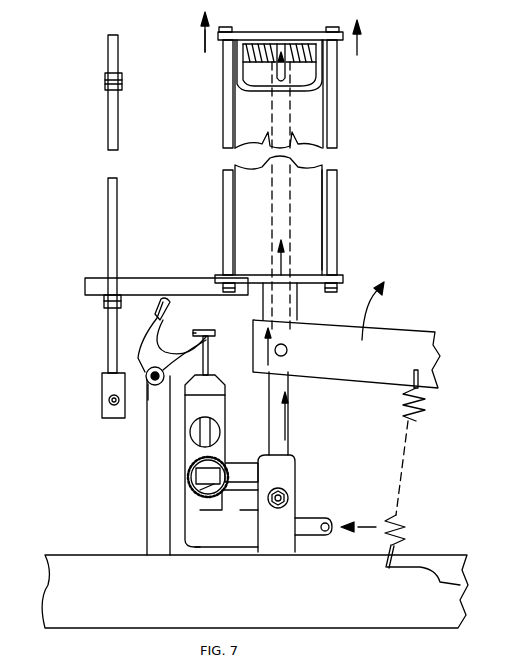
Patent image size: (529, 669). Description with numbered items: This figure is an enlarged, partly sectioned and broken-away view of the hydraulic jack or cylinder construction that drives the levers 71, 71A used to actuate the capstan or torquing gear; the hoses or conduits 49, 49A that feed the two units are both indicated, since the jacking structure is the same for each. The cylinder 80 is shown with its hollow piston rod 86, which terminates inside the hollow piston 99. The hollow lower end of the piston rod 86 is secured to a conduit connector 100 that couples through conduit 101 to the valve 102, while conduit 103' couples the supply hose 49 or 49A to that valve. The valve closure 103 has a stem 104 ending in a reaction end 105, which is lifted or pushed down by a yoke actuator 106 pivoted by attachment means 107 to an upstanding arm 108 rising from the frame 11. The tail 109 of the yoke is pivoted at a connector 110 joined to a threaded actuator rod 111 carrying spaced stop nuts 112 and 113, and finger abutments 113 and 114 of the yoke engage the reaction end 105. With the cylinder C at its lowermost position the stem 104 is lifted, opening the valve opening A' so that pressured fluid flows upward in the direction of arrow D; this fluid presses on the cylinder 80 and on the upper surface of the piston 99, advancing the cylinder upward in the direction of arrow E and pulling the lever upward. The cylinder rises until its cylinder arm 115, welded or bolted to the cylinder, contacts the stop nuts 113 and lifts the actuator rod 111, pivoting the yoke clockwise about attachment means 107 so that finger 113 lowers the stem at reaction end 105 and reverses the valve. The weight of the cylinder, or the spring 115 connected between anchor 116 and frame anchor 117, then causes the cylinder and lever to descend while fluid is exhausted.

The frame 11 is at (435, 565).
The hose or conduit 49 is at (341, 509).
The hose or conduit 49A is at (305, 515).
The lever 71 is at (412, 311).
The lever 71A is at (392, 338).
The cylinder 80 is at (300, 242).
The piston rod 86 is at (295, 432).
The hollow piston 99 is at (298, 42).
The conduit connector 100 is at (292, 470).
The conduit 101 is at (237, 465).
The valve 102 is at (185, 480).
The valve closure 103 is at (166, 477).
The conduit 103' is at (240, 542).
The stem 104 is at (208, 364).
The reaction end 105 is at (210, 332).
The yoke actuator 106 is at (199, 334).
The attachment means 107 is at (145, 420).
The upstanding arm 108 is at (158, 533).
The tail 109 is at (138, 395).
The connector 110 is at (108, 385).
The actuator rod 111 is at (112, 229).
The stop nut 112 is at (100, 302).
The stop nut / finger abutment 113 is at (120, 80).
The finger abutment 114 is at (198, 332).
The cylinder arm / spring 115 is at (422, 415).
The anchor 116 is at (437, 368).
The frame anchor 117 is at (450, 585).
The valve opening A' is at (182, 564).
The cylinder C is at (318, 195).
The arrow D is at (290, 410).
The arrow E is at (203, 42).